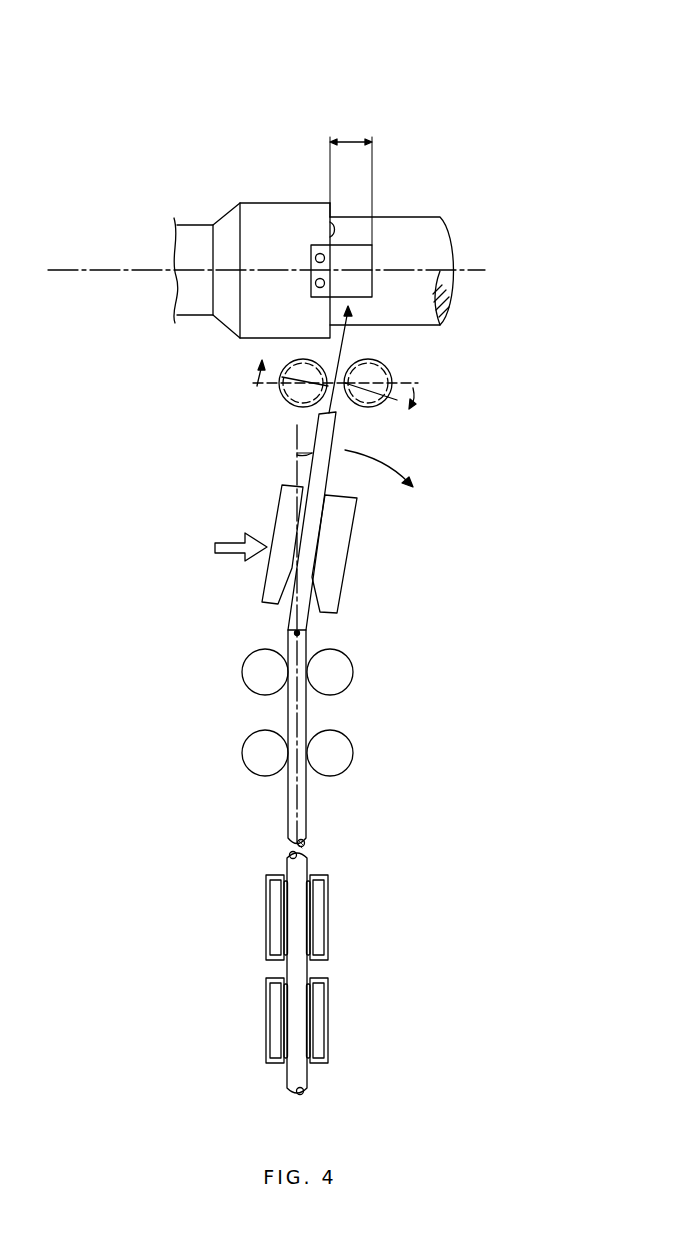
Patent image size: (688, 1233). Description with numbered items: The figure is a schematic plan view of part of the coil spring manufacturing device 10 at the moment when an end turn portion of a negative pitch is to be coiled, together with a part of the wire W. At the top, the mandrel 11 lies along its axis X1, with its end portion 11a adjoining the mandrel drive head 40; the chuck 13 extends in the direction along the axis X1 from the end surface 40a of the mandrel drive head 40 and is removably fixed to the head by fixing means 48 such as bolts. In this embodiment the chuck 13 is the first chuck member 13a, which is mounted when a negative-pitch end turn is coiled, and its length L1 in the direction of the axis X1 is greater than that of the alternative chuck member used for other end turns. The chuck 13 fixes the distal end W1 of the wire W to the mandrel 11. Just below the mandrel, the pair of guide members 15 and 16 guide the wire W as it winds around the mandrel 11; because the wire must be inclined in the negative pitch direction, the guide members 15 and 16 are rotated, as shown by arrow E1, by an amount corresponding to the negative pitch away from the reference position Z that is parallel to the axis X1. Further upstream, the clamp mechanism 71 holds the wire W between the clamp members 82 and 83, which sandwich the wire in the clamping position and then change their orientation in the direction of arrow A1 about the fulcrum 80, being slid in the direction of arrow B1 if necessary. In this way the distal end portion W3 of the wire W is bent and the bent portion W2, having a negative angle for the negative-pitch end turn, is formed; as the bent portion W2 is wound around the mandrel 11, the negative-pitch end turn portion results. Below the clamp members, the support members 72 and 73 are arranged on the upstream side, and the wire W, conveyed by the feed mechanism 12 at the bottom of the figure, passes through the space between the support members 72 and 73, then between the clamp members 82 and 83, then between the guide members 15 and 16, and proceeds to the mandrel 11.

The coil spring manufacturing device 10 is at (425, 62).
The axis of the mandrel X1 is at (83, 268).
The mandrel drive head 40 is at (272, 202).
The end surface of the mandrel drive head 40a is at (332, 228).
The mandrel 11 is at (423, 216).
The end face of shaft 11a is at (336, 216).
The length of the first chuck member L1 is at (352, 135).
The chuck 13 is at (380, 242).
The first chuck member 13a is at (362, 258).
The fixing means 48 is at (317, 280).
The distal end of the wire W1 is at (340, 411).
The guide member 15 is at (280, 403).
The guide member 16 is at (382, 365).
The arrow E1 is at (256, 379).
The reference position Z is at (414, 384).
The distal end portion of the wire W3 is at (333, 474).
The arrow A1 is at (392, 465).
The clamp mechanism 71 is at (378, 523).
The arrow B1 is at (230, 540).
The clamp member 82 is at (276, 569).
The clamp member 83 is at (333, 577).
The bent portion W2 is at (318, 525).
The fulcrum 80 is at (300, 633).
The support member 72 is at (250, 675).
The support member 73 is at (343, 675).
The wire W is at (307, 804).
The feed mechanism 12 is at (337, 942).